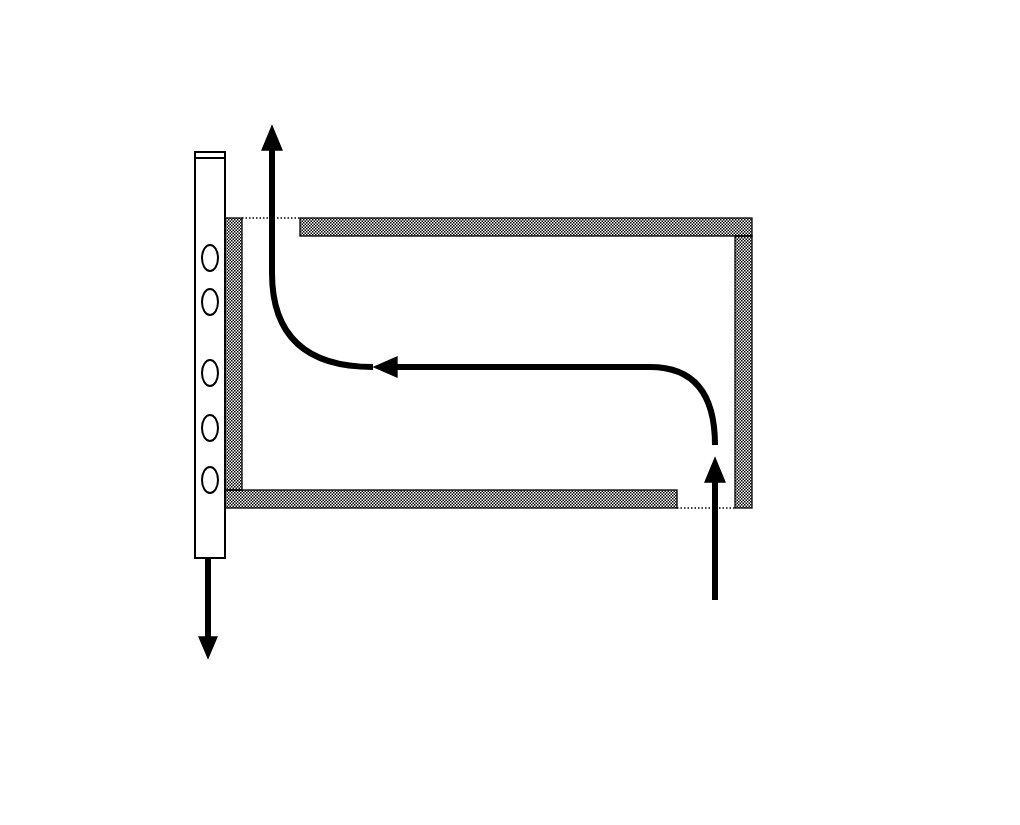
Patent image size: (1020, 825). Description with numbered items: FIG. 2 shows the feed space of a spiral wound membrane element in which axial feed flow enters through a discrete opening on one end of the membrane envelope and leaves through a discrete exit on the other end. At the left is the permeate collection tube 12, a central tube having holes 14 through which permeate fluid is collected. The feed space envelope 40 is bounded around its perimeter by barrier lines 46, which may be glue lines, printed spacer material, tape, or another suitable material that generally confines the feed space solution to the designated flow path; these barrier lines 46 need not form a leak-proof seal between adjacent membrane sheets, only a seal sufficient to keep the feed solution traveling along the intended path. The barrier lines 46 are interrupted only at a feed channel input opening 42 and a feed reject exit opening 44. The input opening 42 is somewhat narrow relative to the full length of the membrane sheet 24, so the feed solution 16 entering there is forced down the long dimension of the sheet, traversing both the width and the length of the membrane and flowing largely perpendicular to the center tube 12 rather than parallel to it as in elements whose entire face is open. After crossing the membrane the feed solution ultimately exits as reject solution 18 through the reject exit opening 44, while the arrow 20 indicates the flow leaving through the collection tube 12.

The permeate collection tube 12 is at (195, 502).
The holes 14 is at (212, 258).
The feed solution 16 is at (715, 573).
The reject solution 18 is at (275, 163).
The tube outlet flow 20 is at (207, 610).
The membrane sheet 24 is at (625, 300).
The feed space envelope 40 is at (566, 159).
The feed channel input opening 42 is at (697, 508).
The feed reject exit opening 44 is at (287, 218).
The barrier lines 46 is at (413, 227).